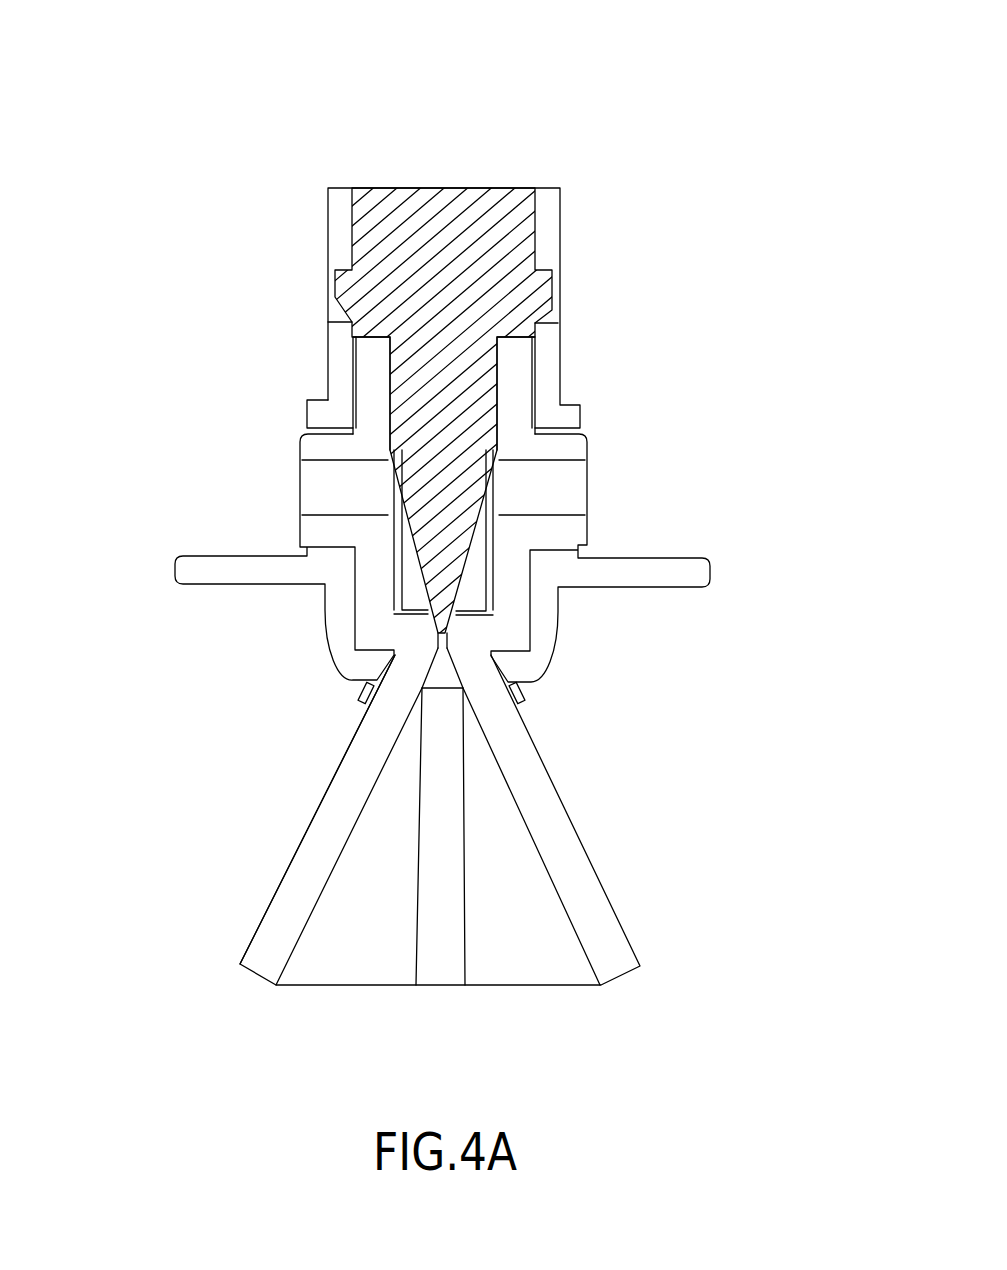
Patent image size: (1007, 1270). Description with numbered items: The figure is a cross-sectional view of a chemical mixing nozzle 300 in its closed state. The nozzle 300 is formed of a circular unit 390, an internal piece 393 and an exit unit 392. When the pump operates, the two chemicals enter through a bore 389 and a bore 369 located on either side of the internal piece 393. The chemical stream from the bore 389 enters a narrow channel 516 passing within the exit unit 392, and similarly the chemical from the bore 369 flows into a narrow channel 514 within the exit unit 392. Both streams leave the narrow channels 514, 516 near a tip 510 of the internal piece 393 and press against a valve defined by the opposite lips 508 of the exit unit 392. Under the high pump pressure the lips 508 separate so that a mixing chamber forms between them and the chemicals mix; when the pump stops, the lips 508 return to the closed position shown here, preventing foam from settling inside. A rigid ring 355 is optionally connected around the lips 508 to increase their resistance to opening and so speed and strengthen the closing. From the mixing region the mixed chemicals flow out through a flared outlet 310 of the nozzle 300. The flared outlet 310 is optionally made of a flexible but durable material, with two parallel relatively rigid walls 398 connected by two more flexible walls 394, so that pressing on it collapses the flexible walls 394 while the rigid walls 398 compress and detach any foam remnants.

The chemical mixing nozzle 300 is at (213, 110).
The internal piece 393 is at (448, 212).
The circular unit 390 is at (562, 233).
The narrow channel 514 is at (390, 483).
The narrow channel 516 is at (493, 485).
The bore 369 is at (325, 498).
The bore 389 is at (553, 498).
The tip 510 is at (446, 598).
The lips 508 is at (450, 642).
The exit unit 392 is at (695, 714).
The rigid ring 355 is at (527, 692).
The flared outlet 310 is at (560, 840).
The rigid walls 398 is at (322, 838).
The flexible walls 394 is at (493, 972).